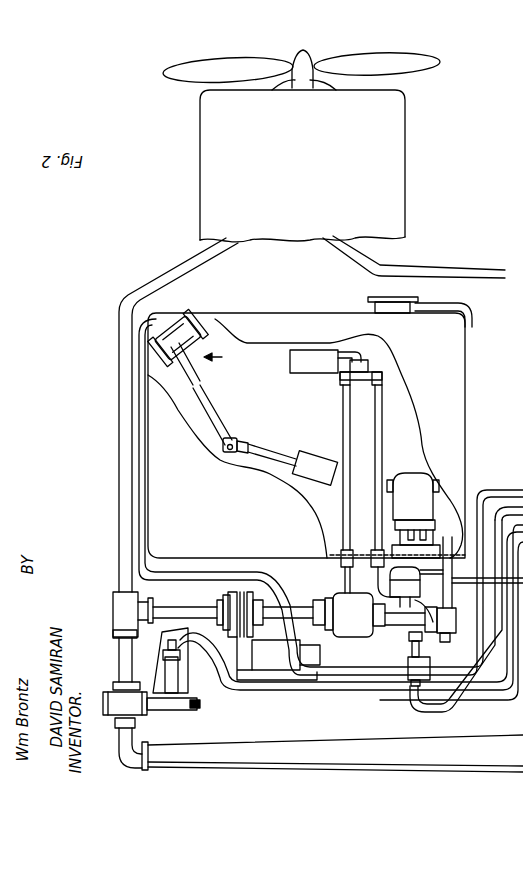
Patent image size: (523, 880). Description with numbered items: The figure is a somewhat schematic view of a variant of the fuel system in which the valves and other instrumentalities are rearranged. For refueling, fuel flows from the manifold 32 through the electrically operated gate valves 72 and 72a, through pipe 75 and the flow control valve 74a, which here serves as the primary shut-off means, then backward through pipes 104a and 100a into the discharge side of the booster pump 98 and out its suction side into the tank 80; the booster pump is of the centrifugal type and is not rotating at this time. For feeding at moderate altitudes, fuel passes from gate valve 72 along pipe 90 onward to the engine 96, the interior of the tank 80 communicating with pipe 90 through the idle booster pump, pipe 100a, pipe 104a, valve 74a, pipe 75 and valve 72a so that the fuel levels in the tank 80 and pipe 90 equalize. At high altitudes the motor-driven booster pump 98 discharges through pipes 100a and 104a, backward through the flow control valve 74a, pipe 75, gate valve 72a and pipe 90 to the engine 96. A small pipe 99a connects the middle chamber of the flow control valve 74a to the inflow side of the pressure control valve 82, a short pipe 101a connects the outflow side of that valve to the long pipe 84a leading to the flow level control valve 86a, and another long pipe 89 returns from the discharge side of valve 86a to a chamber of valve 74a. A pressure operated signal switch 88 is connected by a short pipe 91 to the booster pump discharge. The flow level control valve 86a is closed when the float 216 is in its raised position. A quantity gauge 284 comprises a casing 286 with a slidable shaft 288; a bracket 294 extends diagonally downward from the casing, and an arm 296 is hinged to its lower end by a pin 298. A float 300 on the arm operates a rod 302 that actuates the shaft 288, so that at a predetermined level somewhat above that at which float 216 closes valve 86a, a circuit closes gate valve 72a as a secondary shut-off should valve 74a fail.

The engine 96 is at (364, 165).
The pipe 90 is at (119, 545).
The tank 80 is at (455, 393).
The casing 286 is at (200, 320).
The quantity gauge 284 is at (229, 362).
The shaft 288 is at (200, 368).
The bracket 294 is at (215, 427).
The pin 298 is at (225, 457).
The rod 302 is at (234, 442).
The arm 296 is at (268, 468).
The float 300 is at (315, 468).
The float 216 is at (303, 375).
The flow level control valve 86a is at (380, 378).
The long pipe 84a is at (383, 425).
The long pipe 89 is at (342, 412).
The short pipe 101a is at (344, 572).
The booster pump 98 is at (410, 475).
The electrically operated gate valve 72a is at (222, 599).
The pipe 75 is at (288, 610).
The flow control valve 74a is at (333, 600).
The pressure control valve 82 is at (403, 640).
The small pipe 99a is at (390, 630).
The pipe 100a is at (449, 640).
The short pipe 91 is at (447, 642).
The pipe 104a is at (447, 648).
The pressure operated signal switch 88 is at (410, 690).
The electrically operated gate valve 72 is at (150, 712).
The manifold 32 is at (240, 766).